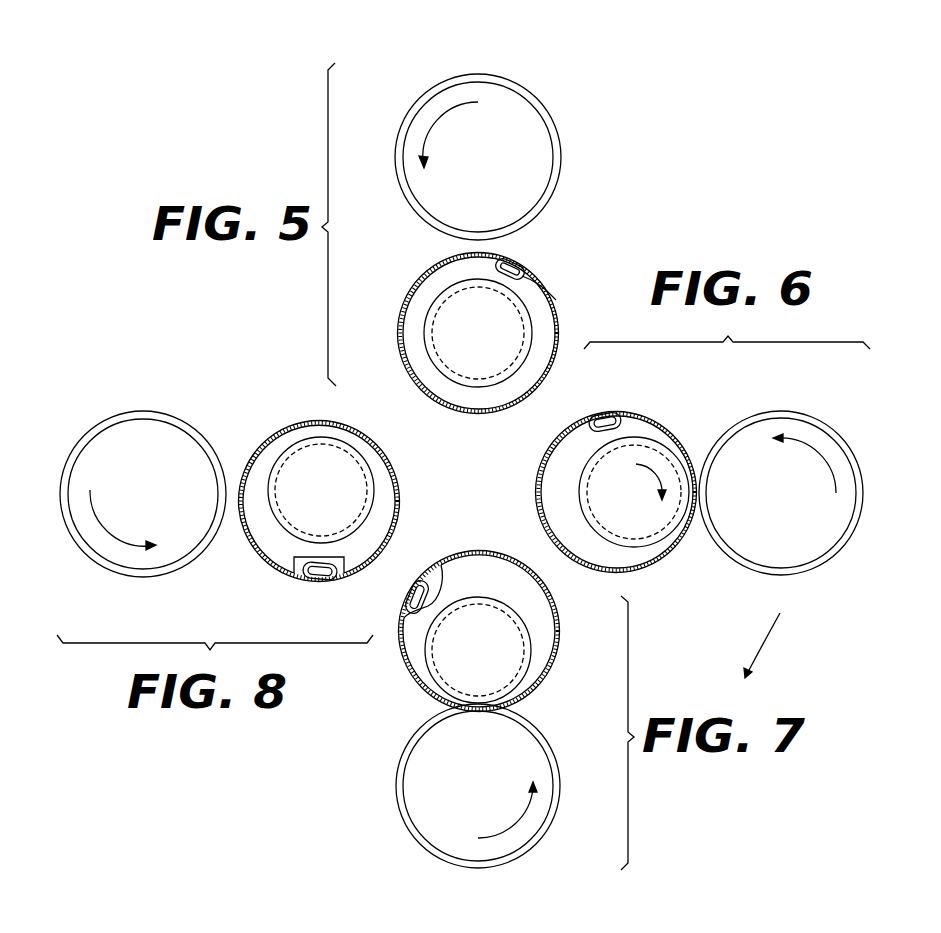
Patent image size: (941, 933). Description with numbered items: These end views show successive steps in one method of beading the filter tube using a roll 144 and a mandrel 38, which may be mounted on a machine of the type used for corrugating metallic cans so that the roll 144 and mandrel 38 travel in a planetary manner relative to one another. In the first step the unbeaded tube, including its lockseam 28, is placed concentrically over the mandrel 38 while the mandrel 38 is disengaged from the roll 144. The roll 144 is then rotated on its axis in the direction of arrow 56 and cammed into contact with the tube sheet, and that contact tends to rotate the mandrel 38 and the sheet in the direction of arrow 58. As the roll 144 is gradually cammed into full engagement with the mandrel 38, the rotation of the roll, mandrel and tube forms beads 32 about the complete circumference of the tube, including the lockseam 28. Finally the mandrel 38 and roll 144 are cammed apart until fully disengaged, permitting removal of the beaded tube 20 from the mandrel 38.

In FIG. 5, the beaded tube 20 is at (548, 302).
In FIG. 7, the lockseam 28 is at (413, 578).
In FIG. 7, the beads 32 is at (527, 588).
In FIG. 5, the mandrel 38 is at (494, 346).
In FIG. 7, the mandrel 38 is at (494, 664).
In FIG. 8, the mandrel 38 is at (336, 506).
In FIG. 6, the arrow 56 is at (815, 458).
In FIG. 6, the arrow 58 is at (656, 470).
In FIG. 5, the roll 144 is at (508, 104).
In FIG. 6, the roll 144 is at (805, 545).
In FIG. 7, the roll 144 is at (425, 843).
In FIG. 8, the roll 144 is at (143, 412).